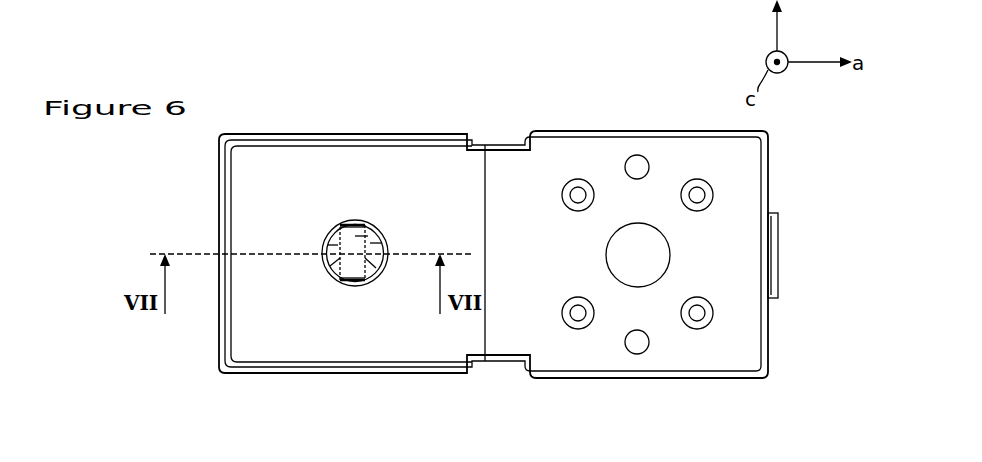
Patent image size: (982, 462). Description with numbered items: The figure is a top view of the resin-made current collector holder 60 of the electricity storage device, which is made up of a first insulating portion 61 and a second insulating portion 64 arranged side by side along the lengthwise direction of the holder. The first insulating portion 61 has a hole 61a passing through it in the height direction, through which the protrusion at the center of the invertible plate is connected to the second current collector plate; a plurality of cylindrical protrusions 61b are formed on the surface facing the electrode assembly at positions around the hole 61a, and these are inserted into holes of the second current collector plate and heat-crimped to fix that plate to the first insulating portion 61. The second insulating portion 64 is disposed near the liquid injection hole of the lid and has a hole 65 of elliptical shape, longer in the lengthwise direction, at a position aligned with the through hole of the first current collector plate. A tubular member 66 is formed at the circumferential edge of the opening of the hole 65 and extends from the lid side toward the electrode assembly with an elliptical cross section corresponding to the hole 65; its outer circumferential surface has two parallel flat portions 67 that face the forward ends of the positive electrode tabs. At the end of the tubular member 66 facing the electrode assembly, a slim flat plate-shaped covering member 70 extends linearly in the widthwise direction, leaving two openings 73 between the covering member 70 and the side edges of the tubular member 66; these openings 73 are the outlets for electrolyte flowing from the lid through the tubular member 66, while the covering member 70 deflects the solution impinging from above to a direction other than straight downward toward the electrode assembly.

The current collector holder 60 is at (413, 107).
The first insulating portion 61 is at (670, 338).
The hole 61a is at (643, 240).
The cylindrical protrusions 61b is at (578, 178).
The second insulating portion 64 is at (295, 340).
The hole 65 is at (328, 245).
The tubular member 66 is at (381, 278).
The flat portions 67 is at (352, 223).
The covering member 70 is at (370, 236).
The openings 73 is at (385, 243).